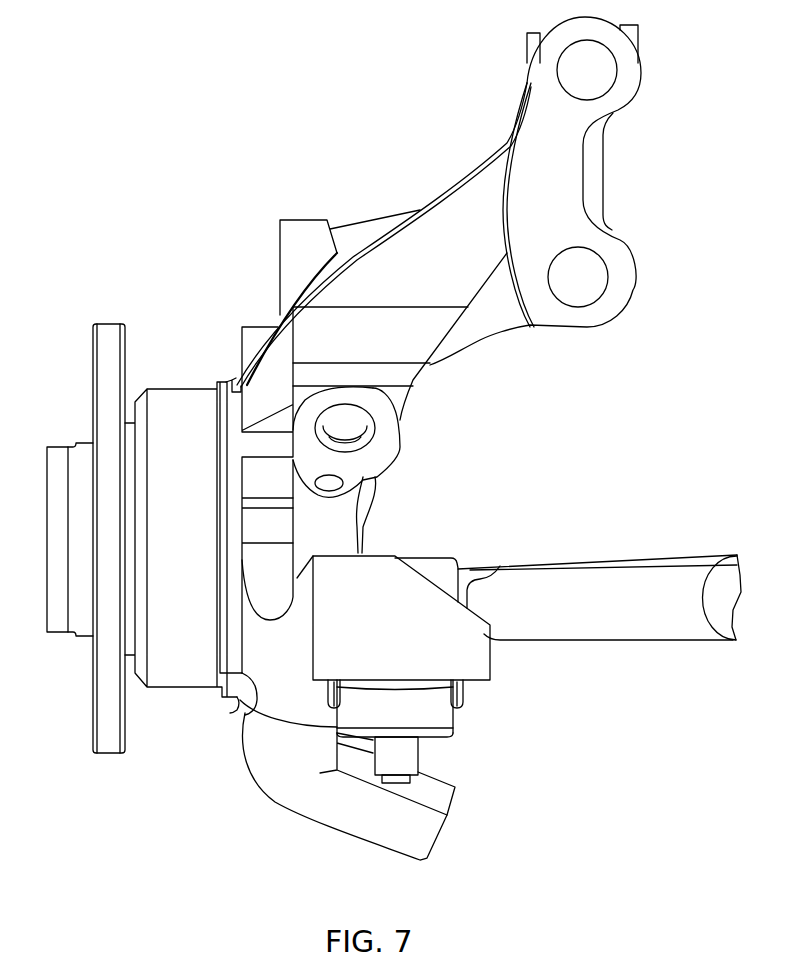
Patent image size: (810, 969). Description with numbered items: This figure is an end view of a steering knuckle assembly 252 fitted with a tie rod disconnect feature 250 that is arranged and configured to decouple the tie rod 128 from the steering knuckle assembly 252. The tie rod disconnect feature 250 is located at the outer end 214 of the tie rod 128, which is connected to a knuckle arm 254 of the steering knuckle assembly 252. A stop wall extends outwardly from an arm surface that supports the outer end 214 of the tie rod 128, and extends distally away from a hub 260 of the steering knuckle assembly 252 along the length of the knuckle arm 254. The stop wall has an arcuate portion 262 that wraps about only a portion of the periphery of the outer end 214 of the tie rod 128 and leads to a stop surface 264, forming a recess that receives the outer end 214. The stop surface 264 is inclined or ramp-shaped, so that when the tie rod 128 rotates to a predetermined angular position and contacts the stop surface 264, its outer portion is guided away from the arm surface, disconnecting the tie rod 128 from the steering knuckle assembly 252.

The steering knuckle assembly 252 is at (203, 267).
The hub 260 is at (422, 432).
The tie rod disconnect feature 250 is at (428, 528).
The stop surface 264 is at (469, 606).
The arcuate portion 262 is at (338, 622).
The outer end 214 is at (547, 567).
The tie rod 128 is at (658, 580).
The knuckle arm 254 is at (255, 700).